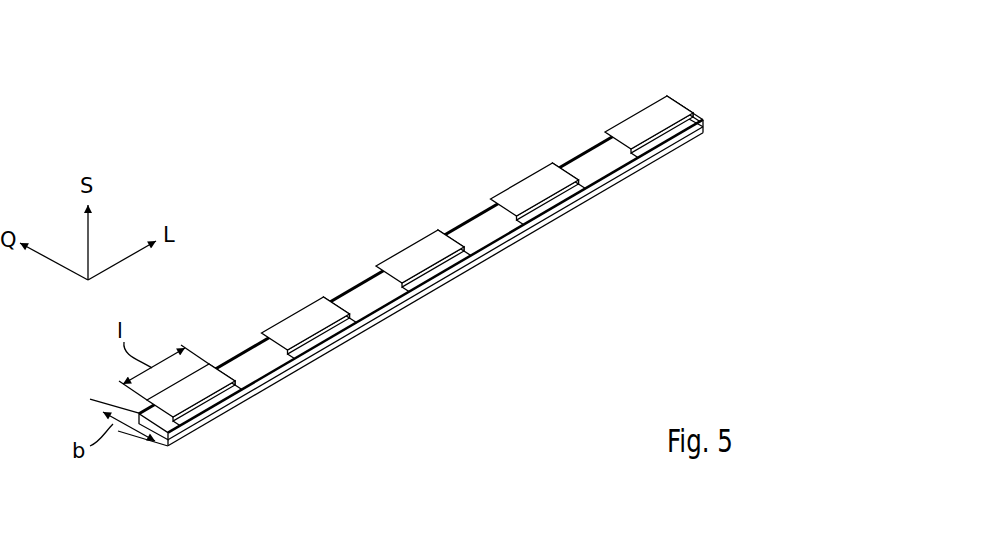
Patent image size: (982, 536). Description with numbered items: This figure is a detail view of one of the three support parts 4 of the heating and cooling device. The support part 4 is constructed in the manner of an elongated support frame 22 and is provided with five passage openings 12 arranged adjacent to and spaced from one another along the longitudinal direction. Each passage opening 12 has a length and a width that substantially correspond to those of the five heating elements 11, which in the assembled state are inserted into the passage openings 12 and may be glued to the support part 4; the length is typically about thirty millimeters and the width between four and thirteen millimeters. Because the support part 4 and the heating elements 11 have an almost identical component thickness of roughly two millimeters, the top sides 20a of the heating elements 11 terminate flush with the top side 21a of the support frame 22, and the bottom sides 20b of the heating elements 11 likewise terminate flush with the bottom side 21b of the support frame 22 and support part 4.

The support part 4 is at (603, 197).
The support frame 22 is at (421, 273).
The heating element 11 is at (425, 243).
The passage opening 12 is at (211, 405).
The top side of heating element 20a is at (412, 252).
The bottom side of heating element 20b is at (430, 292).
The top side of support frame 21a is at (352, 298).
The bottom side of support frame 21b is at (372, 327).